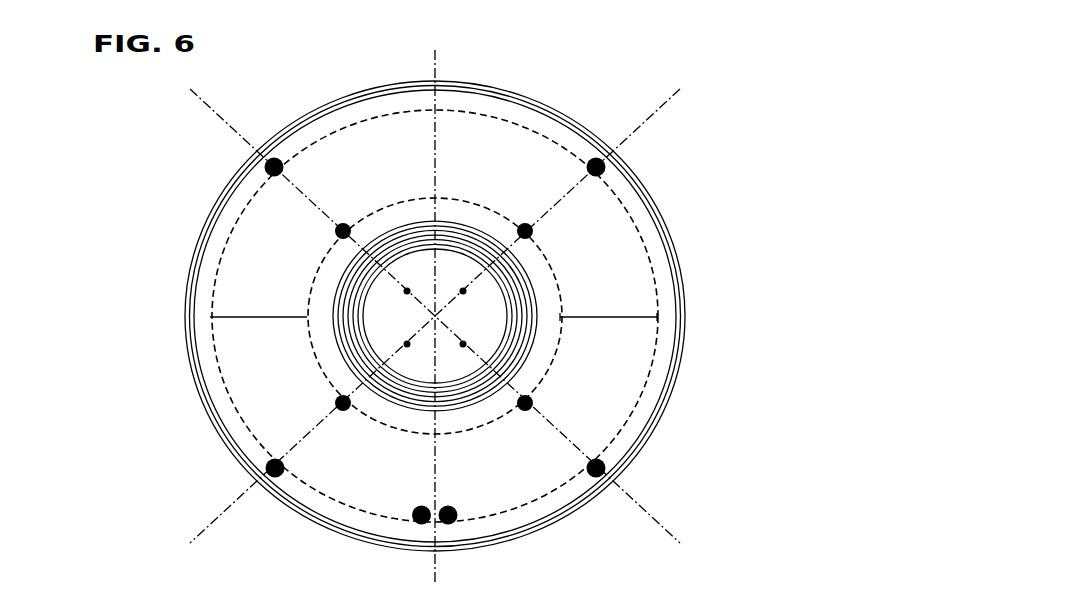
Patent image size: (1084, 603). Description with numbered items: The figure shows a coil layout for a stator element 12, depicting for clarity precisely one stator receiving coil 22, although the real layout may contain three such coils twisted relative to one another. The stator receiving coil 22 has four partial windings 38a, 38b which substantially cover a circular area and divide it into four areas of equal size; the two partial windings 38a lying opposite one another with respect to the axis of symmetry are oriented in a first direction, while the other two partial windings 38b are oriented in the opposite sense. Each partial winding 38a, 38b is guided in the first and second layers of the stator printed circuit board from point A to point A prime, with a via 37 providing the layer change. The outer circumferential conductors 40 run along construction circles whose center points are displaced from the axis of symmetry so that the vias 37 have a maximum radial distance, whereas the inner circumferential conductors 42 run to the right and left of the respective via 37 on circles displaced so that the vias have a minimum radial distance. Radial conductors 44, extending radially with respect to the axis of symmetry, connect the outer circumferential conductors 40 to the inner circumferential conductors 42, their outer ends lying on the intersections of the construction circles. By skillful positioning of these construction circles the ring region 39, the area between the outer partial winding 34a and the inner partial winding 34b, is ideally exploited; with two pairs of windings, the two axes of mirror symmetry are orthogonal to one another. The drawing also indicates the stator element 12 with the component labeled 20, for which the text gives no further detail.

The stator element 12 is at (660, 186).
The stator 20 is at (572, 113).
The stator receiving coil 22 is at (660, 283).
The outer partial winding 34a is at (508, 94).
The inner partial winding 34b is at (488, 228).
The via 37 is at (262, 162).
The partial winding 38a is at (630, 405).
The partial winding 38b is at (640, 248).
The ring region 39 is at (657, 352).
The outer circumferential conductor 40 is at (343, 118).
The inner circumferential conductor 42 is at (412, 200).
The radial conductor 44 is at (440, 143).